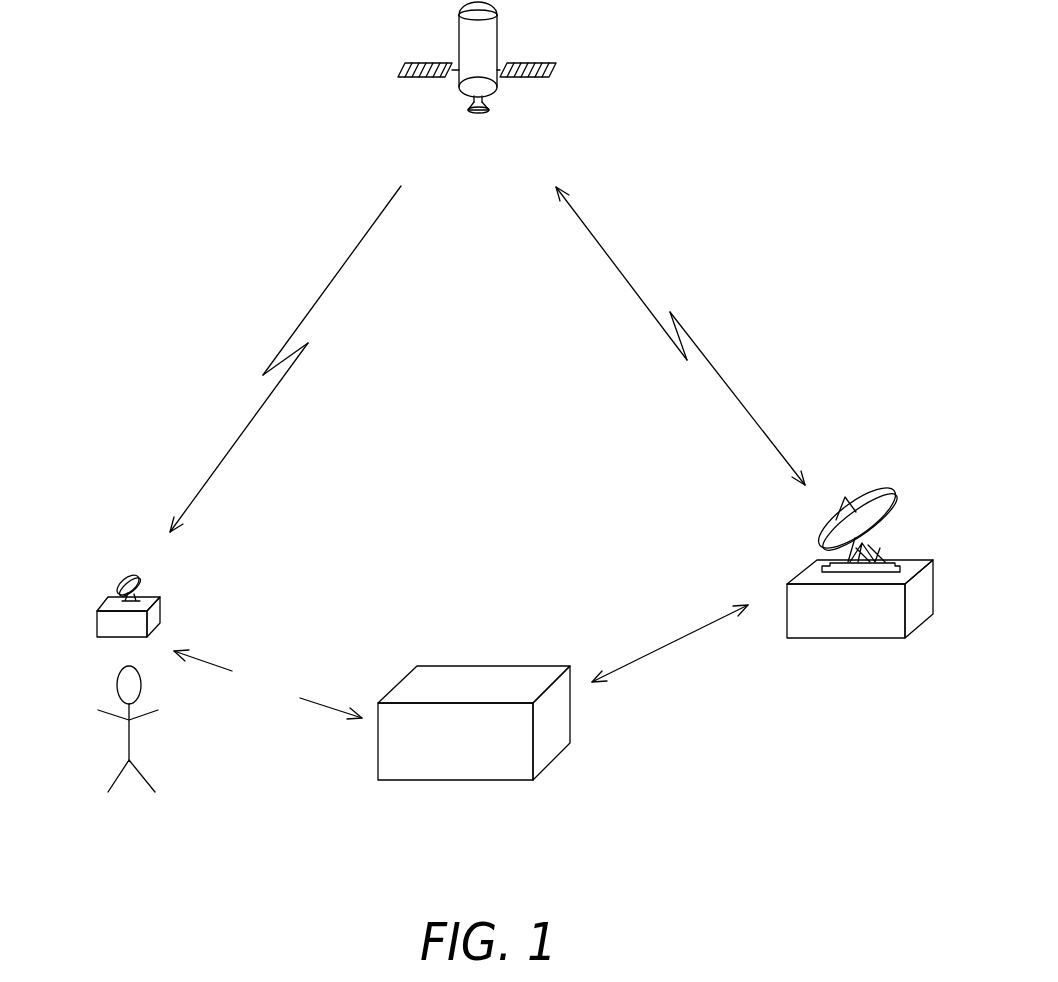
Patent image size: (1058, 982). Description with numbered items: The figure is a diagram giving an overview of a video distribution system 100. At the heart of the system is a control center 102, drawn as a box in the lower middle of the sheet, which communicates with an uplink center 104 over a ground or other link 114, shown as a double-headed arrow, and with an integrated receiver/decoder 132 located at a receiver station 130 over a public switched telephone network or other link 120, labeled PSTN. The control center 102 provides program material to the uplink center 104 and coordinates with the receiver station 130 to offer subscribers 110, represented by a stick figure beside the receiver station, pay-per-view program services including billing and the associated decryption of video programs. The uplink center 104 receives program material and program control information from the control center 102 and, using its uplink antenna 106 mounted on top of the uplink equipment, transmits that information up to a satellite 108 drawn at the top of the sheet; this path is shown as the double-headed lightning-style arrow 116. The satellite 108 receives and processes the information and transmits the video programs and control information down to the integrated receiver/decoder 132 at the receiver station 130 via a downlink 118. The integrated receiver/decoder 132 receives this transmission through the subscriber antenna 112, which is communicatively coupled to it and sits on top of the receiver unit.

The video distribution system 100 is at (776, 228).
The control center 102 is at (553, 762).
The uplink center 104 is at (840, 638).
The uplink antenna 106 is at (898, 507).
The satellite 108 is at (525, 77).
The subscribers 110 is at (157, 735).
The subscriber antenna 112 is at (128, 578).
The ground or other link 114 is at (663, 643).
The communication link between satellite and ground station 116 is at (722, 378).
The downlink 118 is at (335, 278).
The public switched telephone network or other link 120 is at (300, 655).
The receiver station 130 is at (185, 585).
The integrated receiver/decoder 132 is at (97, 624).